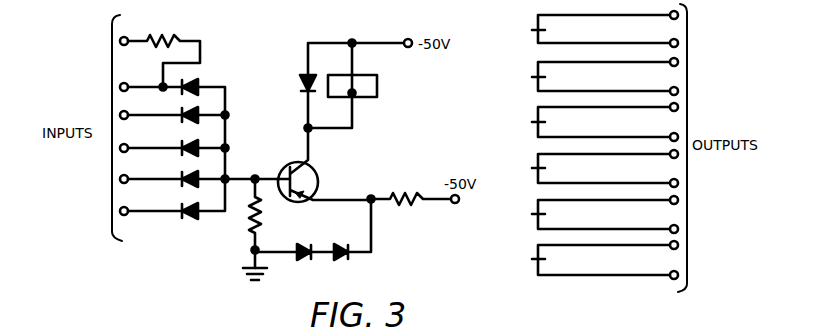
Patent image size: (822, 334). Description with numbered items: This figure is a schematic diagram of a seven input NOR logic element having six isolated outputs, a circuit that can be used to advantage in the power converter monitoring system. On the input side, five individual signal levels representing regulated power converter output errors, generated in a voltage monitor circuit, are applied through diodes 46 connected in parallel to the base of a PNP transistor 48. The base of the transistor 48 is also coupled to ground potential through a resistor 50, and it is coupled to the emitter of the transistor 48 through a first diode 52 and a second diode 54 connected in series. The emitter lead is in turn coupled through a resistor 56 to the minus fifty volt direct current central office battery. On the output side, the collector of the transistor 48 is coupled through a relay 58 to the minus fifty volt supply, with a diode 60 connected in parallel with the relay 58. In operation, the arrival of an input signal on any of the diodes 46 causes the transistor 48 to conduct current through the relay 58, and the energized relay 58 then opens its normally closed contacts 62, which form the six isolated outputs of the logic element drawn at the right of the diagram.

The diodes 46 is at (200, 86).
The PNP transistor 48 is at (319, 168).
The resistor 50 is at (251, 218).
The first diode 52 is at (305, 258).
The second diode 54 is at (344, 258).
The resistor 56 is at (418, 192).
The relay 58 is at (368, 85).
The diode 60 is at (304, 82).
The normally closed contacts 62 is at (533, 28).